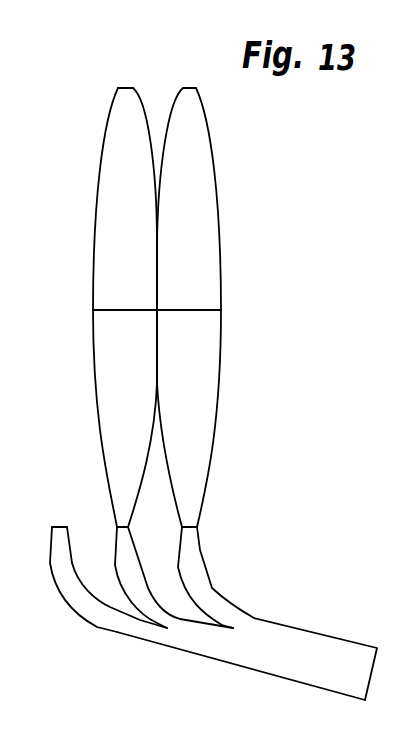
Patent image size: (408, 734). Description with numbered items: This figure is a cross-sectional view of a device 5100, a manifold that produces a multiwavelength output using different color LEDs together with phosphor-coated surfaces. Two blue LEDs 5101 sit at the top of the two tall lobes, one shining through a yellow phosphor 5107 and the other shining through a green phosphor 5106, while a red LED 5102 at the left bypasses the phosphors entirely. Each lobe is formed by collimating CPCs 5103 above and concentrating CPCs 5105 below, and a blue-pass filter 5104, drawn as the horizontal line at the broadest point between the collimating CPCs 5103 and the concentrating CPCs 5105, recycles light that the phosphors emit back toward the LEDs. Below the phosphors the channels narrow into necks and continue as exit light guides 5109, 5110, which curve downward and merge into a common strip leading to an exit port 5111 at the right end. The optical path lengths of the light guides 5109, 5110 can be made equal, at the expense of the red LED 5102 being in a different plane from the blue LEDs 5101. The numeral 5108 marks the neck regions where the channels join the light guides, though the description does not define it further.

The device 5100 is at (68, 96).
The blue LEDs 5101 is at (185, 79).
The red LED 5102 is at (57, 519).
The collimating CPCs 5103 is at (92, 236).
The blue-pass filter 5104 is at (187, 300).
The concentrating CPCs 5105 is at (236, 404).
The green phosphor 5106 is at (196, 516).
The yellow phosphor 5107 is at (124, 526).
The leg neck 5108 is at (197, 532).
The exit light guide 5109 is at (215, 563).
The exit light guide 5110 is at (251, 681).
The exit port 5111 is at (366, 672).